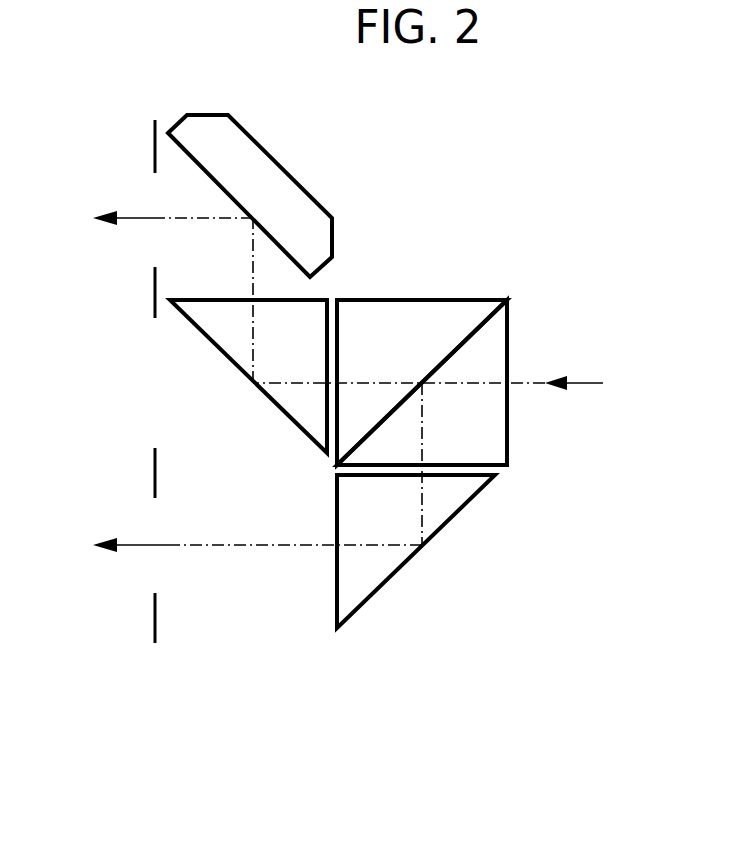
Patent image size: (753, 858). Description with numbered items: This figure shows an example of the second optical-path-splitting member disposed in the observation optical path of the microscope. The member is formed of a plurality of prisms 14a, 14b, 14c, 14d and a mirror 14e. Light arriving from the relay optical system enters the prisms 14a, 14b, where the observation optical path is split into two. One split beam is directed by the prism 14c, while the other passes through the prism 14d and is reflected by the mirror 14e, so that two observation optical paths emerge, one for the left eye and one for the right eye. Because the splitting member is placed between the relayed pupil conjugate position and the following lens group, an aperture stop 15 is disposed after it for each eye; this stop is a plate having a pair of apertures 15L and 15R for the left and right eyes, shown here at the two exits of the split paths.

The prism 14a is at (497, 435).
The prism 14b is at (453, 300).
The prism 14c is at (383, 585).
The prism 14d is at (288, 423).
The mirror 14e is at (297, 180).
The aperture stop 15 is at (155, 133).
The aperture for the left eye 15L is at (155, 268).
The aperture for the right eye 15R is at (155, 493).